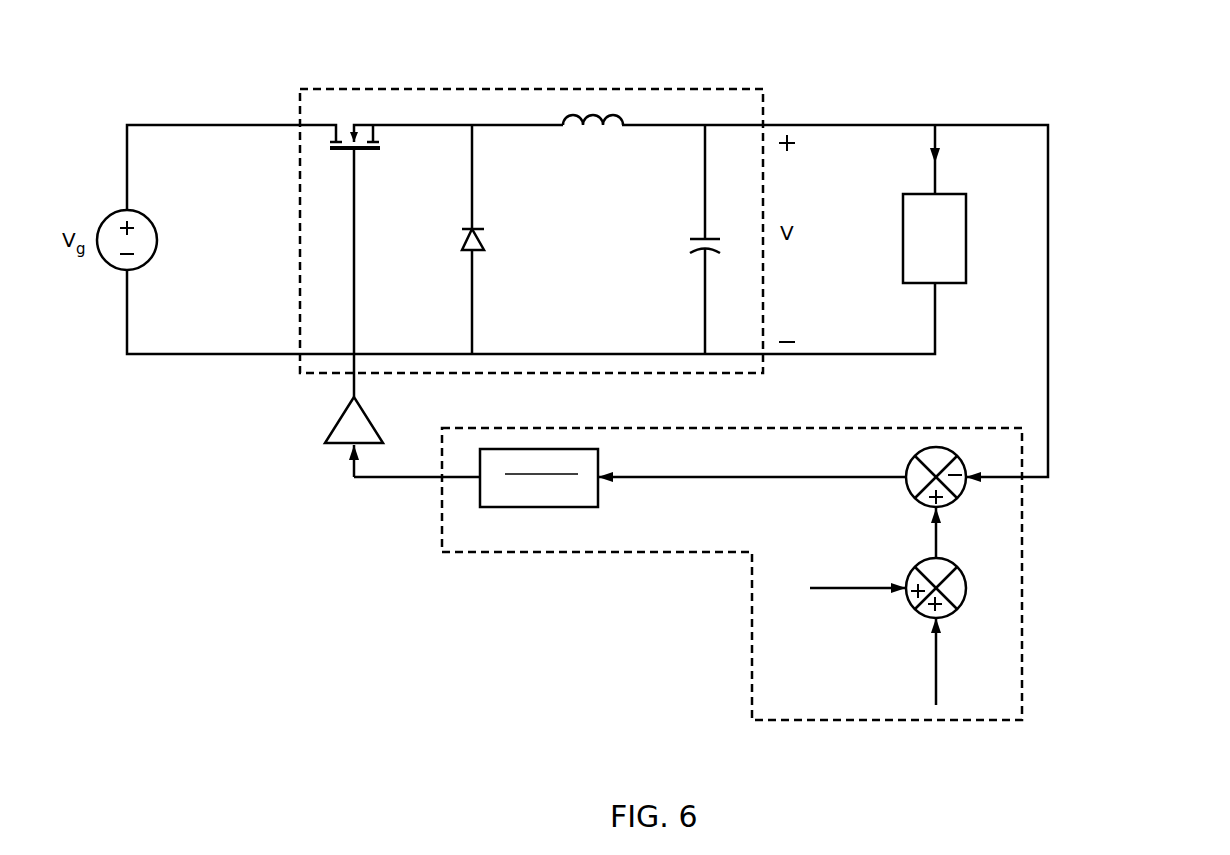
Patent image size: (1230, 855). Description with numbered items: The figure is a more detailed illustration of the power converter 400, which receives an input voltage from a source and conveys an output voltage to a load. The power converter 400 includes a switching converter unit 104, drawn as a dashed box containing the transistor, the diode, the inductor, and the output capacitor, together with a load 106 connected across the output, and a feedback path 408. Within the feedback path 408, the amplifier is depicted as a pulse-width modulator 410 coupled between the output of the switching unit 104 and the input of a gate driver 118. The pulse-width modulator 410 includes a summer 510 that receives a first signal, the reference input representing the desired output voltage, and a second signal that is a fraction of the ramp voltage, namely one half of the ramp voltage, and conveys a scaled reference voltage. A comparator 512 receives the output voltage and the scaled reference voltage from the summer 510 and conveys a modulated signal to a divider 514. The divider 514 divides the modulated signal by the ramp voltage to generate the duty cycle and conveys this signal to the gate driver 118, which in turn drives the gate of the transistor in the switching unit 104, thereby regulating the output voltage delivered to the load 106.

The power converter 400 is at (669, 256).
The switching converter unit 104 is at (740, 90).
The load 106 is at (950, 194).
The gate driver 118 is at (372, 420).
The feedback path 408 is at (1090, 570).
The pulse-width modulator 410 is at (683, 553).
The summer 510 is at (913, 608).
The comparator 512 is at (918, 507).
The divider 514 is at (530, 507).